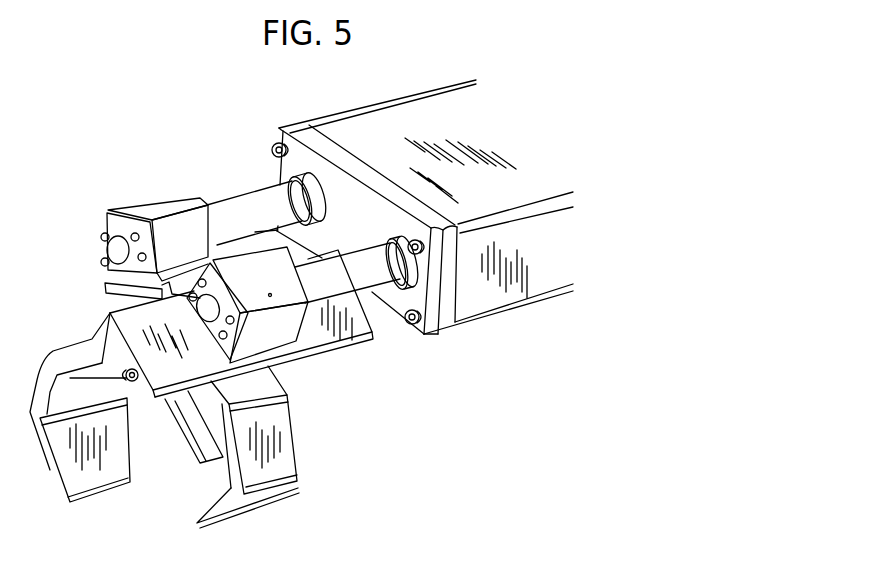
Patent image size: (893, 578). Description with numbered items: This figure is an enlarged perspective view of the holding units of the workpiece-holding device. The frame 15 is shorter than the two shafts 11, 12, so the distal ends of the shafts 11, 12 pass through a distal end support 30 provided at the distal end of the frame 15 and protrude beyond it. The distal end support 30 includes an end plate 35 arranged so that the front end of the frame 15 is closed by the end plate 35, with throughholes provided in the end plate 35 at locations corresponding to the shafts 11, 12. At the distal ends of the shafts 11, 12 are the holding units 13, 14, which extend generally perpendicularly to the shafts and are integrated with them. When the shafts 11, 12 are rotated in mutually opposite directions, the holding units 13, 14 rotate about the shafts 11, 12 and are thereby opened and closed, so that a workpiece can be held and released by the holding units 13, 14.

The shaft 11 is at (375, 277).
The shaft 12 is at (237, 220).
The holding unit 13 is at (287, 458).
The holding unit 14 is at (92, 458).
The frame 15 is at (548, 281).
The distal end support 30 is at (430, 339).
The end plate 35 is at (314, 168).